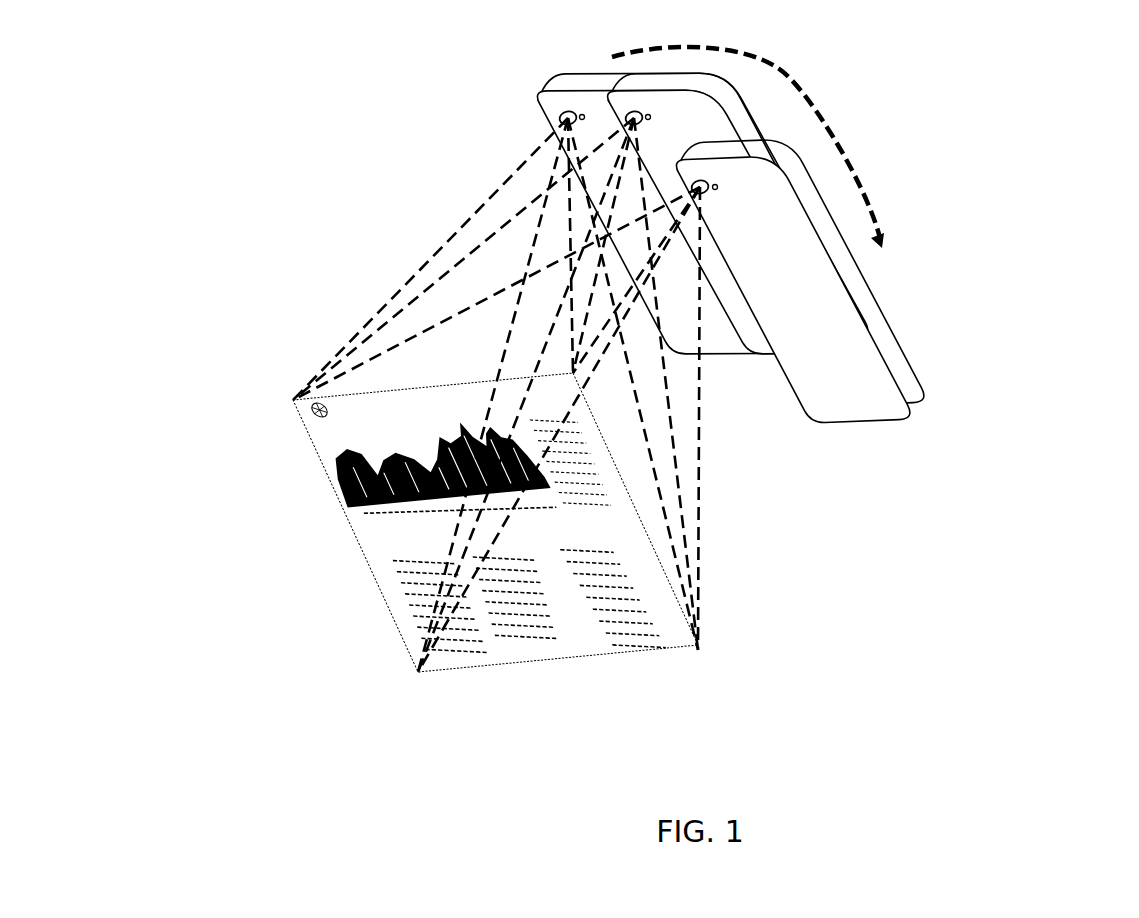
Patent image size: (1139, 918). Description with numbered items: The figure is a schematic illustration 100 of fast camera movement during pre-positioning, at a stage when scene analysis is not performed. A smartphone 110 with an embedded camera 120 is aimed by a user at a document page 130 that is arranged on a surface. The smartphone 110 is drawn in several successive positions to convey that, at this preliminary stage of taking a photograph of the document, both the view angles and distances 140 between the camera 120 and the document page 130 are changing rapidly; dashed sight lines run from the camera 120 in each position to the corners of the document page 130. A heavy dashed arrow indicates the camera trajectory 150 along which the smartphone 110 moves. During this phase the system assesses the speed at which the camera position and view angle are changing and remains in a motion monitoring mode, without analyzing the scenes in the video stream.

The schematic illustration 100 is at (1108, 163).
The smartphone 110 is at (578, 71).
The camera 120 is at (562, 117).
The document page 130 is at (307, 452).
The view angles and distances 140 is at (427, 268).
The camera trajectory 150 is at (826, 87).